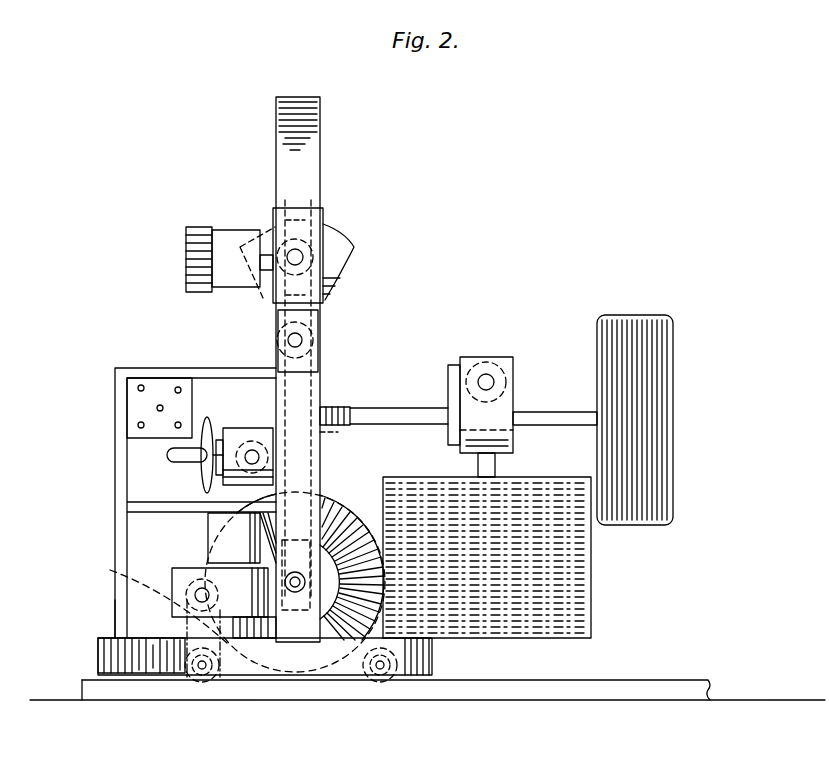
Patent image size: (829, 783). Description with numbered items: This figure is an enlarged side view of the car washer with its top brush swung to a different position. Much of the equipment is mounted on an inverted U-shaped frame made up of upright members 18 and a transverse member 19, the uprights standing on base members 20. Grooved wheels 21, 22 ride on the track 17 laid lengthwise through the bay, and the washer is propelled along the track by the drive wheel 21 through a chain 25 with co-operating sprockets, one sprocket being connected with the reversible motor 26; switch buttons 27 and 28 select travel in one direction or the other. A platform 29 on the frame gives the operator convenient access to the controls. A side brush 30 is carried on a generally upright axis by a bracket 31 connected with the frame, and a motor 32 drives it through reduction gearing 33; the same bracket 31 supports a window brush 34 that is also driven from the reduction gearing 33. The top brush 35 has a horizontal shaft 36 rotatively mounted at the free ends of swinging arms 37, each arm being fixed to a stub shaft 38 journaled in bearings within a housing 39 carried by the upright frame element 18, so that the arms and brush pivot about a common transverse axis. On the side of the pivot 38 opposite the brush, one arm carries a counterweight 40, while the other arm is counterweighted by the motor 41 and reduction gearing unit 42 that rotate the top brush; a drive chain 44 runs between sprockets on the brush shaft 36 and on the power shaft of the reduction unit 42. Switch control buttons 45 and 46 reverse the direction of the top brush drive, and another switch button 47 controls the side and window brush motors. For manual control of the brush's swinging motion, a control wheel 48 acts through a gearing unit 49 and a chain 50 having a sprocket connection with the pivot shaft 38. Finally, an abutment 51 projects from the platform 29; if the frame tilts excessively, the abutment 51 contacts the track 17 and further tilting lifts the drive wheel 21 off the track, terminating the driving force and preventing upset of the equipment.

The track 17 is at (592, 683).
The upright member 18 is at (320, 180).
The transverse member 19 is at (320, 138).
The base member 20 is at (290, 655).
The drive wheel 21 is at (203, 682).
The grooved wheel 22 is at (380, 682).
The chain 25 is at (110, 570).
The motor 26 is at (210, 522).
The switch button 27 is at (139, 386).
The switch button 28 is at (176, 388).
The platform 29 is at (150, 638).
The side brush 30 is at (592, 570).
The bracket 31 is at (368, 410).
The motor 32 is at (505, 357).
The reduction gearing 33 is at (513, 432).
The window brush 34 is at (670, 375).
The top brush 35 is at (340, 510).
The brush shaft 36 is at (296, 590).
The swinging arm 37 is at (300, 209).
The stub shaft 38 is at (292, 336).
The housing 39 is at (318, 328).
The counterweight 40 is at (352, 268).
The motor 41 is at (225, 232).
The reduction gearing unit 42 is at (272, 213).
The drive chain 44 is at (344, 438).
The switch control button 45 is at (139, 425).
The switch control button 46 is at (176, 425).
The switch button 47 is at (158, 407).
The control wheel 48 is at (205, 478).
The gearing unit 49 is at (235, 430).
The chain 50 is at (258, 393).
The abutment 51 is at (100, 652).